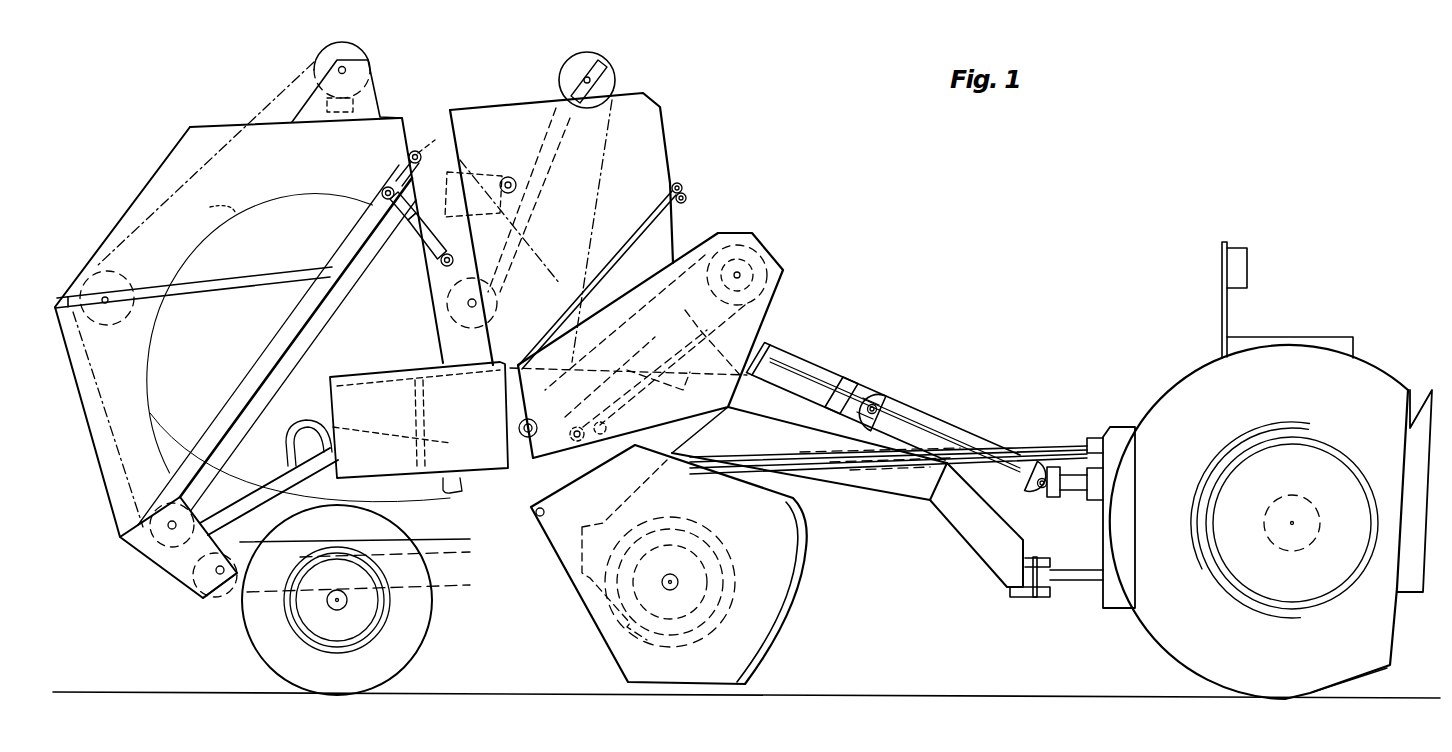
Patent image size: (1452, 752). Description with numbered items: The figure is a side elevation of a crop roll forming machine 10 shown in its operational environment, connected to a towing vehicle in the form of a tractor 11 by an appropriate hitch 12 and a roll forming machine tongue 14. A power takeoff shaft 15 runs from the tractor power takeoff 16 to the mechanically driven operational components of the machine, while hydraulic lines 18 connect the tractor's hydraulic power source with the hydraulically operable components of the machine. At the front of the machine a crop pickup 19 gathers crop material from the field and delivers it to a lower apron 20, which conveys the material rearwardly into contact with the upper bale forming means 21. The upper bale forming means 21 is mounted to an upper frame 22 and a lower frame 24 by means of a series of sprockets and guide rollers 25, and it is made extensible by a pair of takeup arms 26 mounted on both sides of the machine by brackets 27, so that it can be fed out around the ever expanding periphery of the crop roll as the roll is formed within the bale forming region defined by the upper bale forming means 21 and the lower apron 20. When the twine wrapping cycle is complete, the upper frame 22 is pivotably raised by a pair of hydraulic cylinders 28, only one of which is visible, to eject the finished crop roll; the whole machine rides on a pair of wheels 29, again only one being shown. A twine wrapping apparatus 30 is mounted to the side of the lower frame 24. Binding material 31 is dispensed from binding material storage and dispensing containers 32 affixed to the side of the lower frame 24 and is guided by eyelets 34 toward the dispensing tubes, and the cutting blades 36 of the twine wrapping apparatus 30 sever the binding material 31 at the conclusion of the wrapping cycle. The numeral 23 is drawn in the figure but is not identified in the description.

The crop roll forming machine 10 is at (780, 157).
The tractor 11 is at (1325, 338).
The hitch 12 is at (1037, 600).
The roll forming machine tongue 14 is at (915, 494).
The power takeoff shaft 15 is at (868, 392).
The tractor power takeoff 16 is at (1078, 492).
The hydraulic lines 18 is at (1020, 446).
The crop pickup 19 is at (803, 602).
The lower apron 20 is at (462, 538).
The upper bale forming means 21 is at (607, 133).
The upper frame 22 is at (174, 152).
The roller 23 is at (520, 186).
The lower frame 24 is at (216, 601).
The sprockets and guide rollers 25 is at (341, 43).
The takeup arms 26 is at (540, 128).
The brackets 27 is at (478, 168).
The hydraulic cylinders 28 is at (438, 252).
The wheels 29 is at (420, 634).
The twine wrapping apparatus 30 is at (732, 247).
The binding material 31 is at (656, 200).
The binding material storage and dispensing containers 32 is at (455, 490).
The eyelets 34 is at (686, 190).
The cutting blades 36 is at (586, 432).